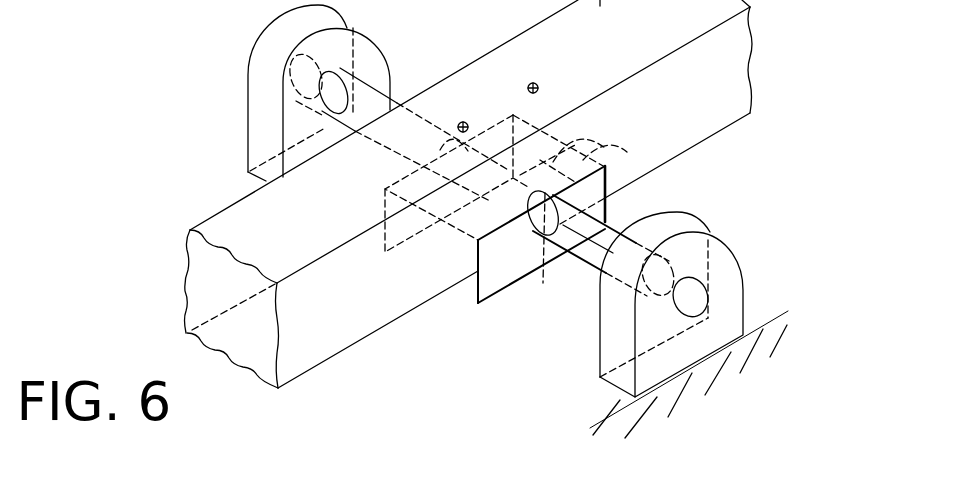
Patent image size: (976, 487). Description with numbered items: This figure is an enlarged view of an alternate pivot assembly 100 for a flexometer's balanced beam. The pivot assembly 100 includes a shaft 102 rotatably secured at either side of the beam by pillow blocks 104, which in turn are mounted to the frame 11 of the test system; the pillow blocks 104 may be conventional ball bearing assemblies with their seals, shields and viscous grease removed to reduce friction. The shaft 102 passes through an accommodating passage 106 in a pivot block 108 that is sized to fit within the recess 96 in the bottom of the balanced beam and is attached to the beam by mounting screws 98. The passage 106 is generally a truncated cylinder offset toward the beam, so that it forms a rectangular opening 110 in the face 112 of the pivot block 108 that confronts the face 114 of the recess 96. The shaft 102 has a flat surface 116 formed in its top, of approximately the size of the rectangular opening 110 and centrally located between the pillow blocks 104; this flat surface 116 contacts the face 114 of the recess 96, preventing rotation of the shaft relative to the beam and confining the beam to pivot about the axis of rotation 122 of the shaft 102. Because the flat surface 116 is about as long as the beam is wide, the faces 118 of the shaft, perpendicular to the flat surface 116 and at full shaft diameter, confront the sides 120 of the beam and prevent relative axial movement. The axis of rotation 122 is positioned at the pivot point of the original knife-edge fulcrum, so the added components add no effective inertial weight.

The frame 11 is at (770, 333).
The recess 96 is at (612, 164).
The mounting screws 98 is at (556, 66).
The pivot assembly 100 is at (690, 192).
The shaft 102 is at (589, 262).
The pillow blocks 104 is at (714, 420).
The passage 106 is at (527, 240).
The pivot block 108 is at (590, 208).
The rectangular opening 110 is at (487, 145).
The face 112 is at (612, 145).
The face 114 is at (478, 243).
The flat surface 116 is at (556, 136).
The faces 118 is at (455, 140).
The sides 120 is at (712, 73).
The axis of rotation 122 is at (696, 298).